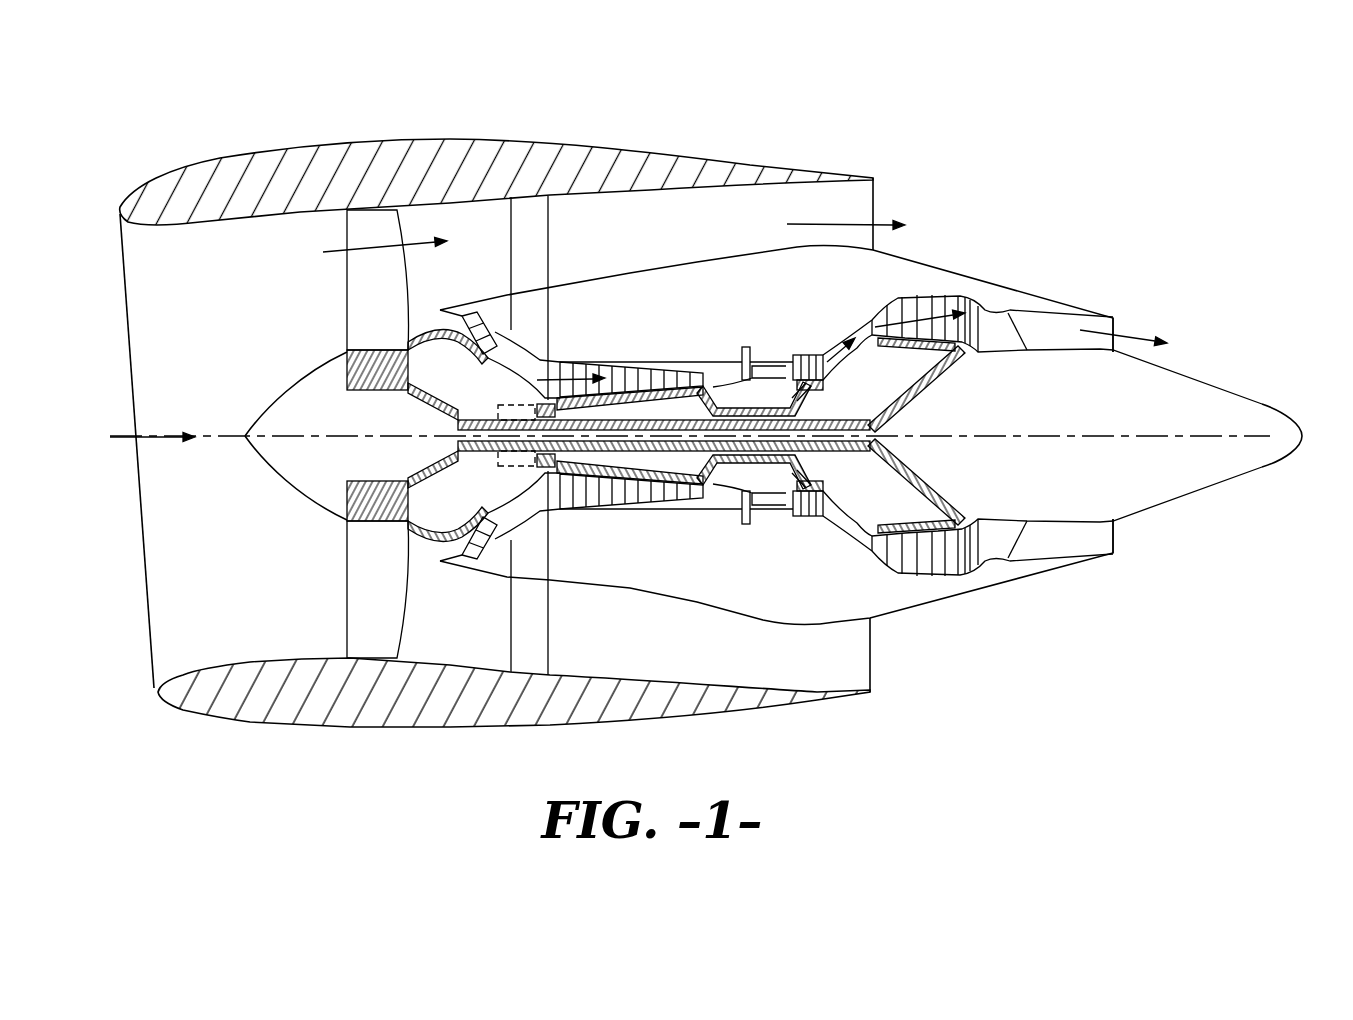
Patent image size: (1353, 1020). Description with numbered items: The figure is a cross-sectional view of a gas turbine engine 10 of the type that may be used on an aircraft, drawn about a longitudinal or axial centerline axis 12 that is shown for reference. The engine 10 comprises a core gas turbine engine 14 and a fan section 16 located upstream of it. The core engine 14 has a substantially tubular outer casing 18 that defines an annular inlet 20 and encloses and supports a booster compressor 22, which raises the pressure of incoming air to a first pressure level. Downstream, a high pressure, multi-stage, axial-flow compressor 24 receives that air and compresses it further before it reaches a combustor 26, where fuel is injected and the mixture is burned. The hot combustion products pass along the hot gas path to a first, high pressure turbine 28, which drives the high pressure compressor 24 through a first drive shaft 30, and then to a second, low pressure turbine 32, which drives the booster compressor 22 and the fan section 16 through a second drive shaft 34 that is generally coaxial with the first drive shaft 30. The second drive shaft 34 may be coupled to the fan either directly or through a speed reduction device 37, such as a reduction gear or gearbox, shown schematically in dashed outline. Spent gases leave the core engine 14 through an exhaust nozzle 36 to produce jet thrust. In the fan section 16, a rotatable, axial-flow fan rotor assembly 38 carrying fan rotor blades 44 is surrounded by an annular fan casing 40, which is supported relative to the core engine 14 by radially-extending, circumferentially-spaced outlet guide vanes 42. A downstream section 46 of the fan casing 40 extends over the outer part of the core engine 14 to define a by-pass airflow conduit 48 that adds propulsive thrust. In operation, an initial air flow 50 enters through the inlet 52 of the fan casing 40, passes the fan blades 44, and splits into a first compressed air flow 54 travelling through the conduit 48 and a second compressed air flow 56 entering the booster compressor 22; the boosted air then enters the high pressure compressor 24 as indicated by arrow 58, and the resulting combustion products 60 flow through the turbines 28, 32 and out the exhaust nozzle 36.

The gas turbine engine 10 is at (1047, 208).
The longitudinal or axial centerline axis 12 is at (1037, 433).
The core gas turbine engine 14 is at (712, 318).
The fan section 16 is at (415, 119).
The outer casing 18 is at (730, 613).
The annular inlet 20 is at (434, 562).
The booster compressor 22 is at (530, 530).
The high pressure compressor 24 is at (580, 500).
The combustor 26 is at (763, 500).
The first (high pressure) turbine 28 is at (837, 507).
The first (high pressure) drive shaft 30 is at (803, 386).
The second (low pressure) turbine 32 is at (963, 580).
The second (low pressure) drive shaft 34 is at (508, 418).
The exhaust nozzle 36 is at (1114, 321).
The speed reduction device 37 is at (509, 470).
The fan rotor assembly 38 is at (403, 397).
The fan casing 40 is at (407, 730).
The outlet guide vanes 42 is at (550, 237).
The fan rotor blades 44 is at (347, 608).
The downstream section 46 is at (760, 163).
The by-pass airflow conduit 48 is at (671, 238).
The initial air flow 50 is at (150, 436).
The inlet 52 is at (150, 657).
The first compressed air flow 54 is at (357, 252).
The second compressed air flow 56 is at (438, 311).
The arrow indicating air flow into high pressure compressor 58 is at (570, 360).
The combustion products 60 is at (803, 360).